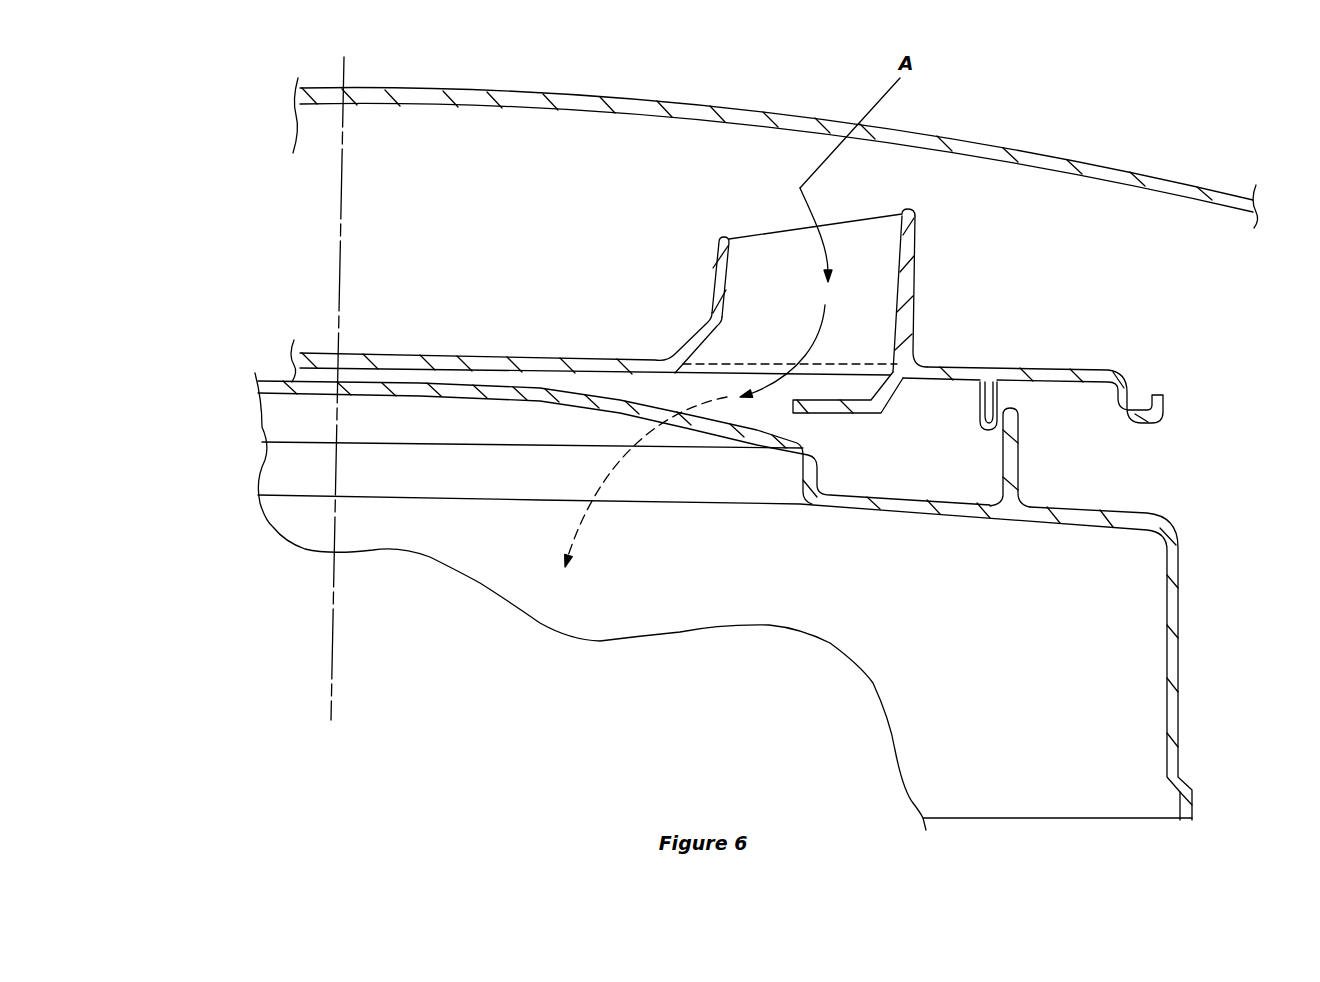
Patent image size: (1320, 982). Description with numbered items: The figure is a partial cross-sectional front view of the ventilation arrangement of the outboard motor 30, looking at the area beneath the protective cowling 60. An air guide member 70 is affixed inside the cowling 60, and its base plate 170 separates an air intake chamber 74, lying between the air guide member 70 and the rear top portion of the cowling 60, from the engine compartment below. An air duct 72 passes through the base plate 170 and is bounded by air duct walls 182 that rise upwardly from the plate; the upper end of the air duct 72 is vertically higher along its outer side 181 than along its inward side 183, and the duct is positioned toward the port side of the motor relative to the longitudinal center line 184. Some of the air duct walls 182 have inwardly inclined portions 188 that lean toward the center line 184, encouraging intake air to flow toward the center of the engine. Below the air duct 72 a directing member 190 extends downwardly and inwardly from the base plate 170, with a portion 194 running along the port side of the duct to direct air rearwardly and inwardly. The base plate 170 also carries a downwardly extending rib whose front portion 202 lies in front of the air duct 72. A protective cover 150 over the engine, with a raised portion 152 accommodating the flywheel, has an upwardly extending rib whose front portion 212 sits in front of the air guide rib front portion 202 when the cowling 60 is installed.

The outboard motor 30 is at (212, 121).
The protective cowling 60 is at (1108, 153).
The air guide member 70 is at (1046, 351).
The air duct 72 is at (823, 273).
The air intake chamber 74 is at (490, 194).
The protective cover 150 is at (415, 371).
The raised portion 152 is at (495, 400).
The base plate 170 is at (540, 357).
The outer side 181 is at (914, 303).
The air duct walls 182 is at (917, 252).
The inward side 183 is at (716, 257).
The longitudinal center line 184 is at (331, 683).
The inwardly inclined portions 188 is at (693, 334).
The directing member 190 is at (856, 410).
The port side portion 194 is at (894, 392).
The front portion of rib 202 is at (982, 413).
The cover rib front portion 212 is at (1018, 450).